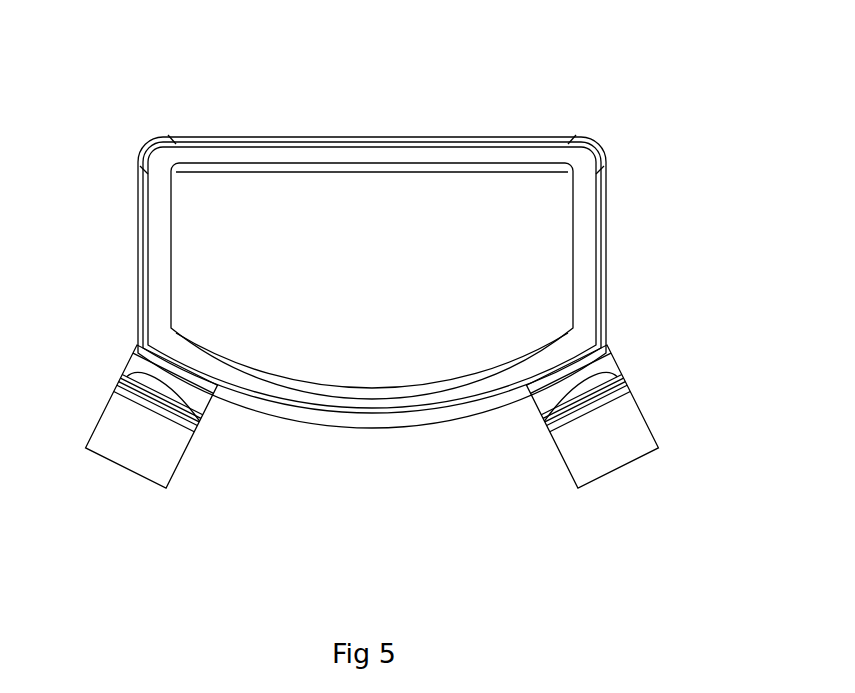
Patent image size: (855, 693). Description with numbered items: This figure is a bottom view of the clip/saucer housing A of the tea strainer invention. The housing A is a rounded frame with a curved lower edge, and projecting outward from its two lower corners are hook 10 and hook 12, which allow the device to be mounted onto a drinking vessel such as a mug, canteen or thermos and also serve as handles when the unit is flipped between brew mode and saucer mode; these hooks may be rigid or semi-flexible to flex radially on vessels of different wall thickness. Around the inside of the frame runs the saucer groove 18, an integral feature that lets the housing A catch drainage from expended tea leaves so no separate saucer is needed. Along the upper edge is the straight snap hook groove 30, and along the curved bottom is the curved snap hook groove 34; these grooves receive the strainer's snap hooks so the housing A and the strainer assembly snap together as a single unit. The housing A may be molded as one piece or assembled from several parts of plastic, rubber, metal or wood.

The clip/saucer housing A is at (420, 326).
The saucer groove 18 is at (312, 343).
The straight snap hook groove 30 is at (238, 168).
The curved snap hook groove 34 is at (239, 392).
The hook 10 is at (127, 475).
The hook 12 is at (617, 475).